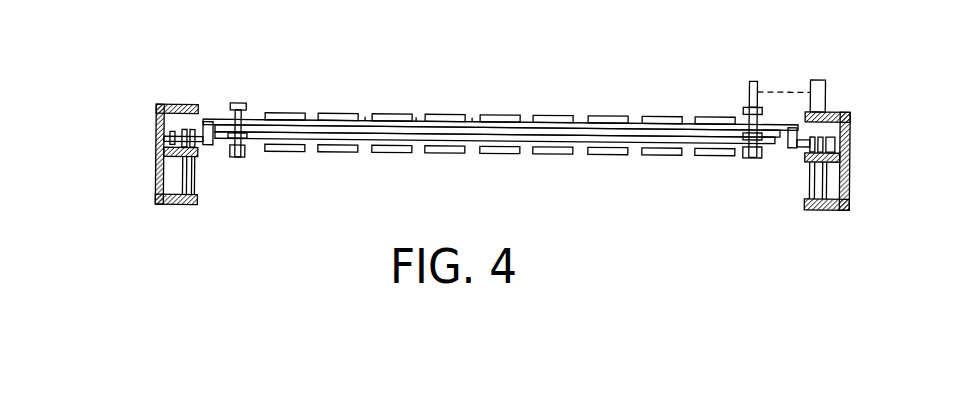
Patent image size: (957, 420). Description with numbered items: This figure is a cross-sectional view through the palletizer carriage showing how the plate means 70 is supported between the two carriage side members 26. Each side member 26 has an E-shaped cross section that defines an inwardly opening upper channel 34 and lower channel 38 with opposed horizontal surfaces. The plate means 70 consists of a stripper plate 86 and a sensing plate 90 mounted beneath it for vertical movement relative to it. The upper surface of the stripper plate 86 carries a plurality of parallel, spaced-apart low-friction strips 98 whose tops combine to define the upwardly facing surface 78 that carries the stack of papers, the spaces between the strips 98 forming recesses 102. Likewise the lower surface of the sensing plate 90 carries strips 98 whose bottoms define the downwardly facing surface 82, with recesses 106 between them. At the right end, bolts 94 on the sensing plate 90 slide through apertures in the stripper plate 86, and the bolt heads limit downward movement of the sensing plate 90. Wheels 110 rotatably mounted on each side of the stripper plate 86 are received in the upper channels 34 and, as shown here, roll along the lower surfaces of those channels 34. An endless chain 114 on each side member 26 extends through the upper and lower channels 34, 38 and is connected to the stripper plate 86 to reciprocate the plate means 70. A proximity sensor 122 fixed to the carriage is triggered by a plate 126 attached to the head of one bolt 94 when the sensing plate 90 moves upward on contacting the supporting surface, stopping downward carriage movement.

The side member 26 is at (157, 115).
The upper channel 34 is at (176, 129).
The lower channel 38 is at (175, 172).
The plate means 70 is at (506, 80).
The upwardly facing surface 78 is at (551, 107).
The downwardly facing surface 82 is at (555, 158).
The stripper plate 86 is at (320, 117).
The sensing plate 90 is at (317, 142).
The bolt 94 is at (242, 102).
The low-friction strip 98 is at (660, 116).
The recess 102 is at (472, 118).
The recess 106 is at (692, 152).
The wheel 110 is at (164, 140).
The endless chain 114 is at (197, 190).
The proximity sensor 122 is at (823, 85).
The plate 126 is at (758, 82).